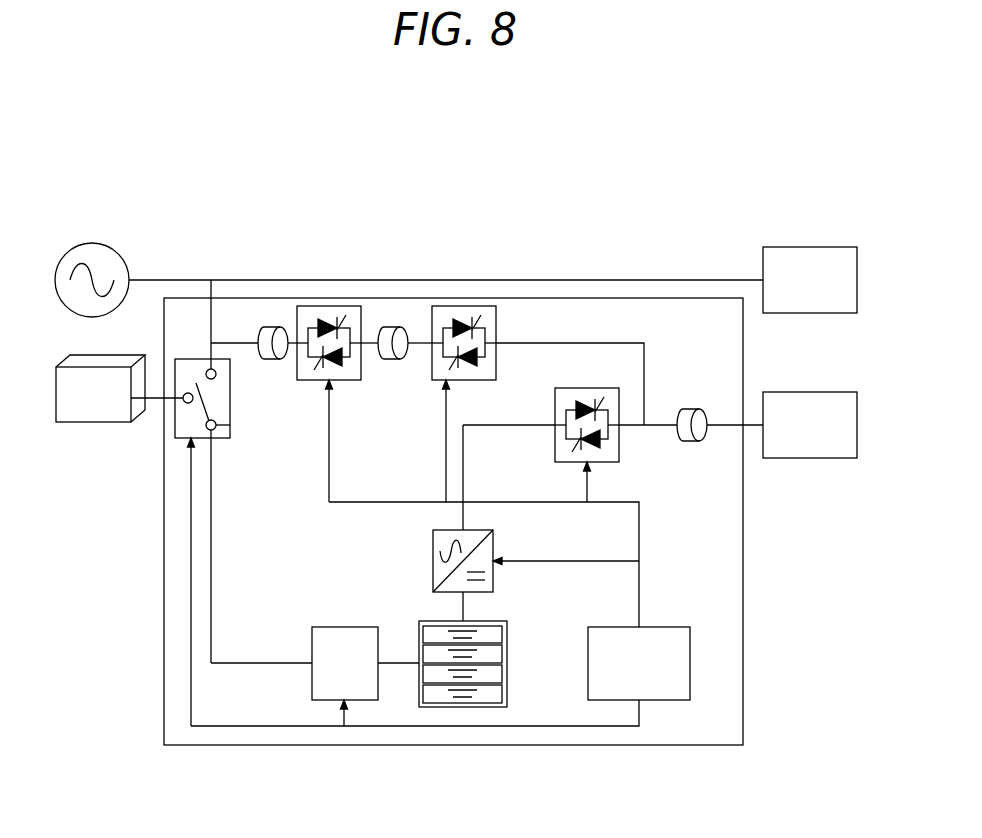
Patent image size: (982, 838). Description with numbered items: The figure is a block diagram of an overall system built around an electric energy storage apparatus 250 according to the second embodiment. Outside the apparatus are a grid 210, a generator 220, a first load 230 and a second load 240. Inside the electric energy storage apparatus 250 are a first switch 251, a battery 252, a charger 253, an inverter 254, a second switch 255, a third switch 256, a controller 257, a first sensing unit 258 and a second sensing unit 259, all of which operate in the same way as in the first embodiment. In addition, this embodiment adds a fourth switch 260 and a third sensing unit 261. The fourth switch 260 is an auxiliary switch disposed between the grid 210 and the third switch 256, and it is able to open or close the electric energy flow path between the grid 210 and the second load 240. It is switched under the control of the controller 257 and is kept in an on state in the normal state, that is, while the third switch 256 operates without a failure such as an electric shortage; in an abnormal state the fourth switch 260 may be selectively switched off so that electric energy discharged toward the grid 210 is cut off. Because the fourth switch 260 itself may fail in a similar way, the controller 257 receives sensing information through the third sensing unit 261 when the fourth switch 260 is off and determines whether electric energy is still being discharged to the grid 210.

The grid 210 is at (91, 243).
The generator 220 is at (92, 422).
The first load 230 is at (808, 247).
The second load 240 is at (810, 458).
The electric energy storage apparatus 250 is at (628, 745).
The first switch 251 is at (230, 435).
The battery 252 is at (507, 660).
The charger 253 is at (334, 627).
The inverter 254 is at (433, 553).
The second switch 255 is at (555, 405).
The third switch 256 is at (463, 306).
The controller 257 is at (665, 627).
The first sensing unit 258 is at (692, 442).
The second sensing unit 259 is at (392, 360).
The fourth switch 260 is at (328, 306).
The third sensing unit 261 is at (273, 360).